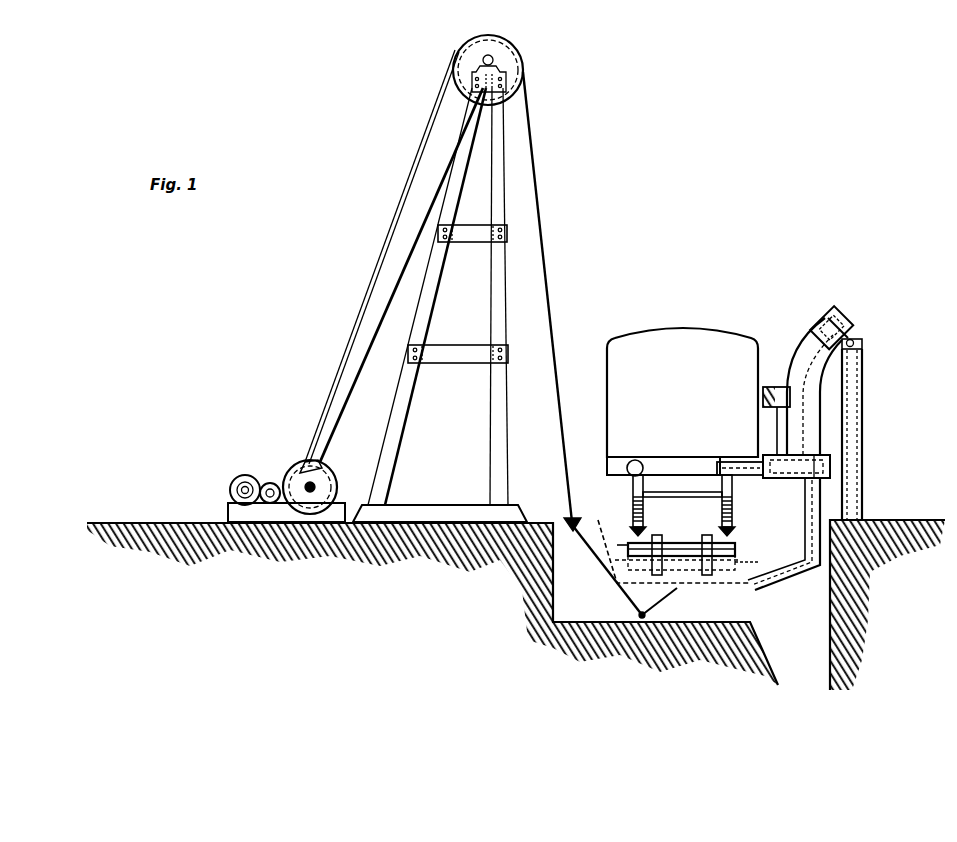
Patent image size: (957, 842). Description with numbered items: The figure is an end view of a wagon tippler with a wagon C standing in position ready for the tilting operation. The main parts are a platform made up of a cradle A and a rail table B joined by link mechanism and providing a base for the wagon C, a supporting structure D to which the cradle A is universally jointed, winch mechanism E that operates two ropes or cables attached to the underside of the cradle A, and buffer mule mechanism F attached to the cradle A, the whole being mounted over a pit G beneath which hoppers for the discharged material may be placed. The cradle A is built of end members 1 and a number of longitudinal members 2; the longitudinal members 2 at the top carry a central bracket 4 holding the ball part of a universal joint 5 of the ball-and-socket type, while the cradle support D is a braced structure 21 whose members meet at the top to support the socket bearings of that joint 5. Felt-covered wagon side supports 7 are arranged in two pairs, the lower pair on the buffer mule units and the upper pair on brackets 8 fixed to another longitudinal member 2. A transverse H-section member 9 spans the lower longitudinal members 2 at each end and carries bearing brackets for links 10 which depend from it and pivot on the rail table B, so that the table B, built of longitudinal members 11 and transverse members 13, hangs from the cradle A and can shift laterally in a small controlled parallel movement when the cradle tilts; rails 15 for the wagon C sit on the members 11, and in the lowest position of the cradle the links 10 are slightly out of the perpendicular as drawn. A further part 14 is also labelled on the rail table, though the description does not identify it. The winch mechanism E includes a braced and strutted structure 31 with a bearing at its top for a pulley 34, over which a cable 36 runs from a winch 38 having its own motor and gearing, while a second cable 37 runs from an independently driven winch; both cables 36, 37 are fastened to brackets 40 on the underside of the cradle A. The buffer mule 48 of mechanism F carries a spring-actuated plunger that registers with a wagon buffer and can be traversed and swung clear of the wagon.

The end members 1 is at (818, 500).
The longitudinal members 2 is at (836, 318).
The central bracket 4 is at (852, 336).
The universal joint 5 is at (860, 344).
The wagon side supports 7 is at (775, 406).
The brackets 8 is at (778, 386).
The transverse H-section member 9 is at (738, 560).
The links 10 is at (684, 545).
The longitudinal members 11 is at (706, 535).
The transverse members 13 is at (628, 545).
The clamp 14 is at (643, 529).
The rails 15 is at (635, 522).
The braced structure 21 is at (863, 397).
The braced and strutted structure 31 is at (411, 389).
The pulley 34 is at (510, 47).
The cable 36 is at (537, 120).
The cable 37 is at (379, 272).
The winch 38 is at (312, 462).
The brackets 40 is at (665, 601).
The buffer mule 48 is at (740, 462).
The cradle A is at (790, 551).
The rail table B is at (736, 545).
The wagon C is at (661, 338).
The supporting structure D is at (863, 426).
The winch mechanism E is at (504, 219).
The buffer mule mechanism F is at (780, 479).
The pit G is at (553, 600).